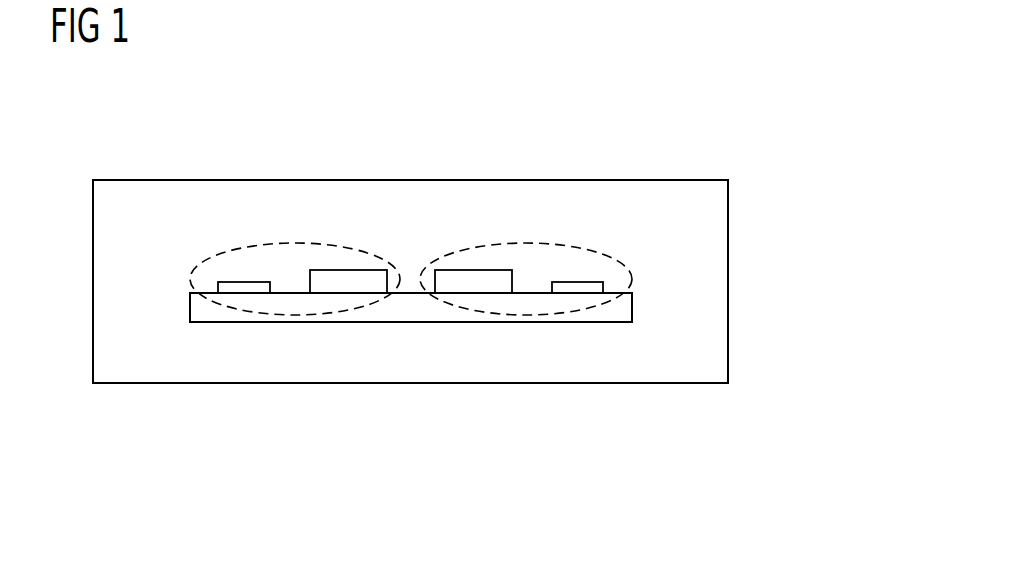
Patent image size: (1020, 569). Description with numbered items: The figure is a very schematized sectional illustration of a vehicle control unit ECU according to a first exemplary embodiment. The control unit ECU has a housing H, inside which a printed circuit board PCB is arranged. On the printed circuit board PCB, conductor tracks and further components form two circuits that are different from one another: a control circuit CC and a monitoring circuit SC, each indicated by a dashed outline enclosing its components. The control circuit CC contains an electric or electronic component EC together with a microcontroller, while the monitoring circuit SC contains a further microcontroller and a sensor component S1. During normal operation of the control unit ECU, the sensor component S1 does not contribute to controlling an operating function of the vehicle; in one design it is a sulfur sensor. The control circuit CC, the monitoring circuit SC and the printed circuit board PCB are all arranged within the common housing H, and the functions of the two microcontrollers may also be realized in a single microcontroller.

The control unit ECU is at (724, 145).
The housing H is at (689, 383).
The printed circuit board PCB is at (208, 316).
The control circuit CC is at (192, 275).
The monitoring circuit SC is at (630, 270).
The electric or electronic component EC is at (248, 287).
The sensor component S1 is at (577, 287).